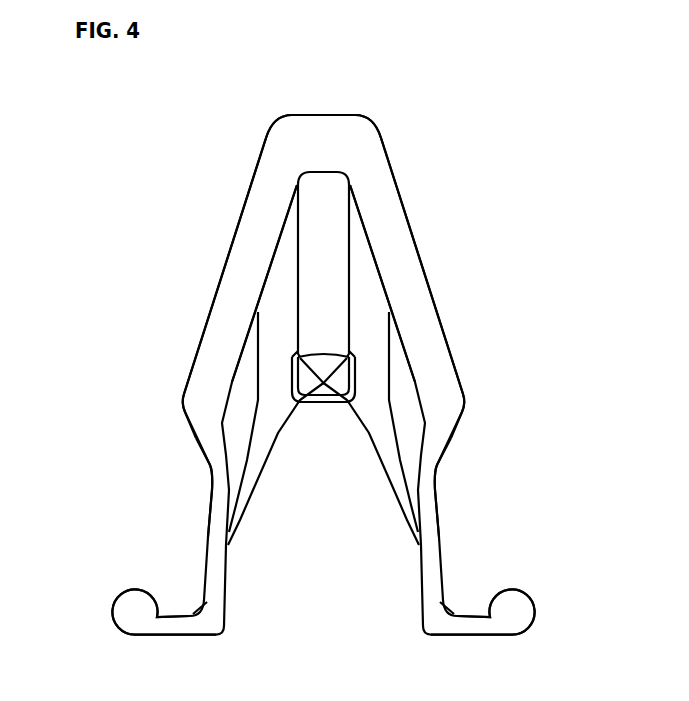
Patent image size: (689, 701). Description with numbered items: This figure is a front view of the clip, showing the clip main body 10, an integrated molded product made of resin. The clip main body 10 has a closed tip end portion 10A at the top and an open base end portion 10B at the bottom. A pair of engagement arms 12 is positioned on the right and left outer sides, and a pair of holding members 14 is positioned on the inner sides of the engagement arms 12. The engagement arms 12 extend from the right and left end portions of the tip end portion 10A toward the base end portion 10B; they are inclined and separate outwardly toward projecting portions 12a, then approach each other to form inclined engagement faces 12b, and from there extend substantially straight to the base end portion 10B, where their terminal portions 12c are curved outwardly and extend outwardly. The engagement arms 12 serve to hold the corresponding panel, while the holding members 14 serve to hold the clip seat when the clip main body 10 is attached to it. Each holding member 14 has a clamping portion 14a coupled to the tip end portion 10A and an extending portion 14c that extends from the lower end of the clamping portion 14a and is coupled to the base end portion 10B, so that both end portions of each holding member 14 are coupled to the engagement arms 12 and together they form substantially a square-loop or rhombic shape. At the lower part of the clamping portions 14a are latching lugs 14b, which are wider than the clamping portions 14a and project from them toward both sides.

The clip main body 10 is at (243, 133).
The tip end portion 10A is at (343, 107).
The base end portion 10B is at (315, 605).
The engagement arm 12 is at (242, 248).
The projecting portion 12a is at (182, 402).
The inclined engagement face 12b is at (192, 436).
The terminal portion 12c is at (167, 625).
The holding member 14 is at (243, 352).
The clamping portion 14a is at (273, 292).
The latching lug 14b is at (312, 374).
The extending portion 14c is at (256, 486).